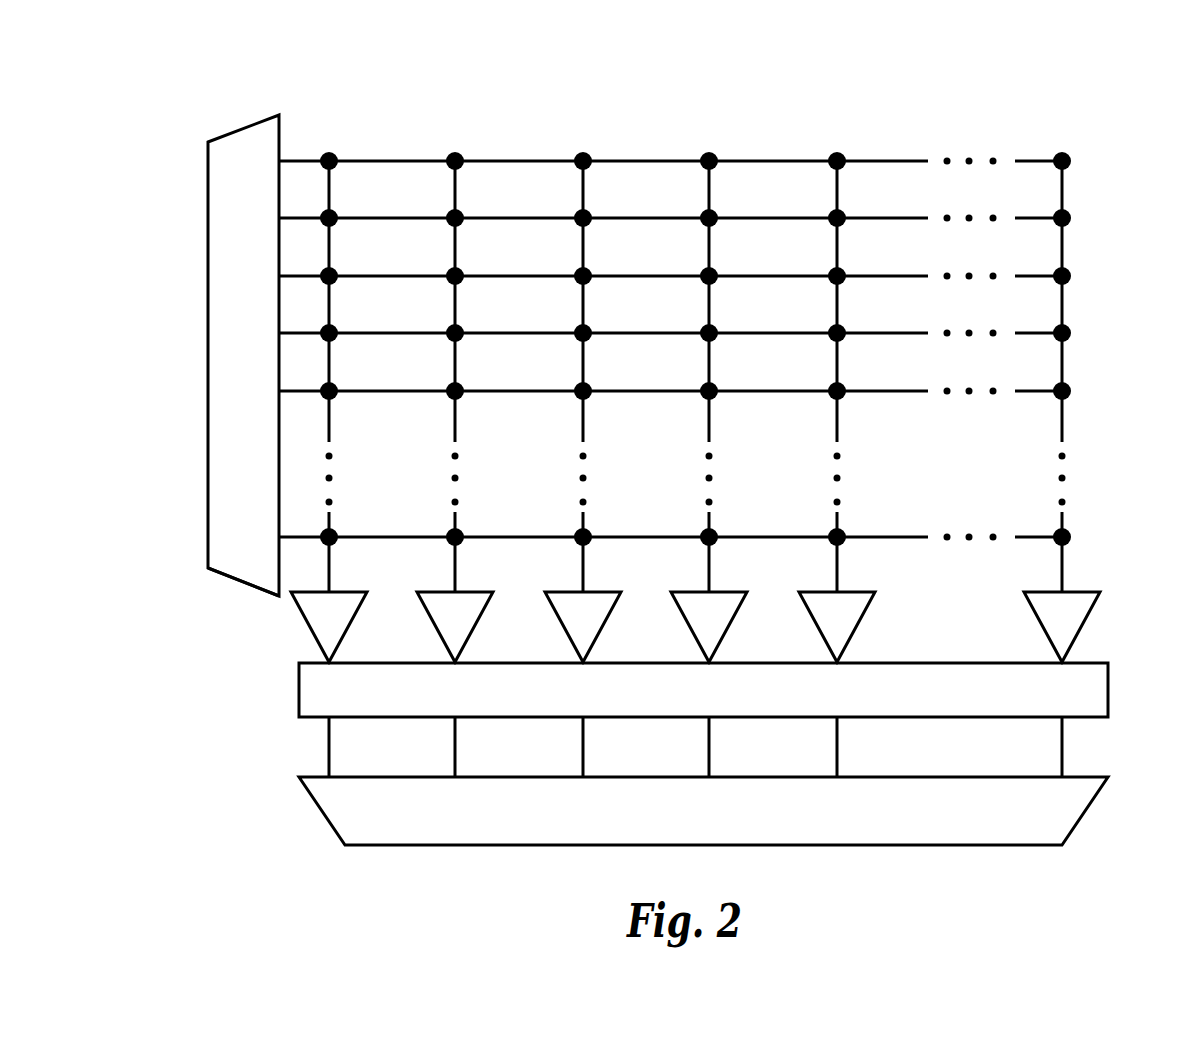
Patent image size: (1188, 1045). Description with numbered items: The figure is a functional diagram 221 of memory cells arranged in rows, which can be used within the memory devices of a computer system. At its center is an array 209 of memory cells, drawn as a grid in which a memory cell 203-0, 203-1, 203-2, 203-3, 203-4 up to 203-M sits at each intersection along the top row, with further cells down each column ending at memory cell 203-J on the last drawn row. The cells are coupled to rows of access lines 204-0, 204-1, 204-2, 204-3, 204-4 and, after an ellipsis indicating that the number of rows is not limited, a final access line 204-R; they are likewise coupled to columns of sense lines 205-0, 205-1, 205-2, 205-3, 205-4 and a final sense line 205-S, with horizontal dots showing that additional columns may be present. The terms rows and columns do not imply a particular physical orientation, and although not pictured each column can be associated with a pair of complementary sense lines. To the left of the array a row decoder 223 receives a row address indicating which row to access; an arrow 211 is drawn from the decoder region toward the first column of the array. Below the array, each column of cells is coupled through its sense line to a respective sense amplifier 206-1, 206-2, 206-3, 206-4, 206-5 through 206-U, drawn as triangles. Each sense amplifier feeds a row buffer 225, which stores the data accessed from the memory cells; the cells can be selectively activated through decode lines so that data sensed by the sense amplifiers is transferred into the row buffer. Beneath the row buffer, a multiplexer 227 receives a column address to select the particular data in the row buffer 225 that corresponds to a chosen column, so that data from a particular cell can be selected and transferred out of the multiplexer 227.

The functional diagram 221 is at (165, 59).
The array 209 is at (305, 99).
The row decoder 223 is at (250, 585).
The access line signal 211 is at (300, 516).
The memory cell 203-0 is at (329, 151).
The memory cell 203-1 is at (455, 151).
The memory cell 203-2 is at (583, 151).
The memory cell 203-3 is at (709, 151).
The memory cell 203-4 is at (837, 151).
The memory cell 203-M is at (1062, 151).
The memory cell 203-J is at (1068, 528).
The access line 204-0 is at (376, 163).
The access line 204-1 is at (376, 220).
The access line 204-2 is at (376, 278).
The access line 204-3 is at (376, 335).
The access line 204-4 is at (376, 393).
The access line 204-R is at (376, 539).
The sense line 205-0 is at (329, 190).
The sense line 205-1 is at (455, 190).
The sense line 205-2 is at (583, 190).
The sense line 205-3 is at (709, 190).
The sense line 205-4 is at (837, 190).
The sense line 205-S is at (1062, 190).
The sense amplifier 206-1 is at (351, 621).
The sense amplifier 206-2 is at (477, 621).
The sense amplifier 206-3 is at (605, 621).
The sense amplifier 206-4 is at (731, 621).
The sense amplifier 206-5 is at (859, 621).
The sense amplifier 206-U is at (1084, 600).
The row buffer 225 is at (1106, 669).
The multiplexer 227 is at (1100, 781).